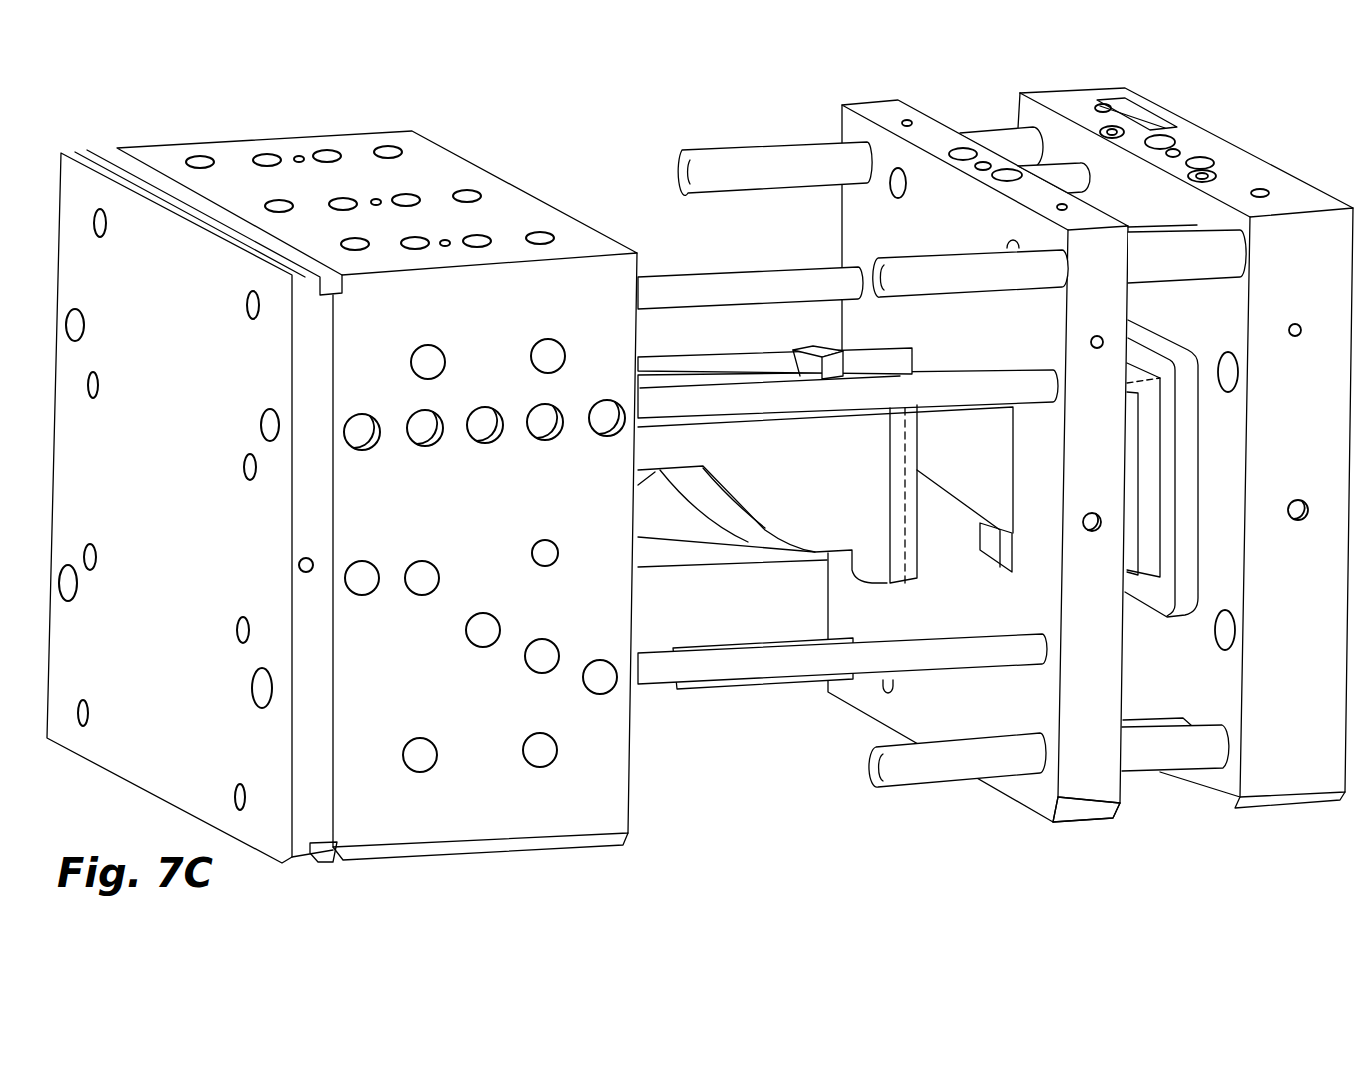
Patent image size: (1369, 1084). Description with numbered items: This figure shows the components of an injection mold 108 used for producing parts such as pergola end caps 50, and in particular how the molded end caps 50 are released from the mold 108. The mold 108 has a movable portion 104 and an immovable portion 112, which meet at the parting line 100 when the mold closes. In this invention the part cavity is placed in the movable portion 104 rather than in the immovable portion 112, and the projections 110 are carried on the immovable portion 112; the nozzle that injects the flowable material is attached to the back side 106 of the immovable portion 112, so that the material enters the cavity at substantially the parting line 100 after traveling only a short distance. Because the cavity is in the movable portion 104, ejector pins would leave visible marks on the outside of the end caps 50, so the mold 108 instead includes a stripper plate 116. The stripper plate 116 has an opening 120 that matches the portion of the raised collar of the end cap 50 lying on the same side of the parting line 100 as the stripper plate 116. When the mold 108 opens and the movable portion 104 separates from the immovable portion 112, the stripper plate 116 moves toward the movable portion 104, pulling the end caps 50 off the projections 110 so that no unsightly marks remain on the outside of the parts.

The end cap 50 is at (745, 365).
The parting line 100 is at (915, 535).
The movable portion 104 is at (462, 521).
The back side 106 is at (1272, 93).
The injection mold 108 is at (650, 819).
The projection 110 is at (1162, 416).
The immovable portion 112 is at (1318, 631).
The stripper plate 116 is at (1090, 834).
The opening 120 is at (882, 348).